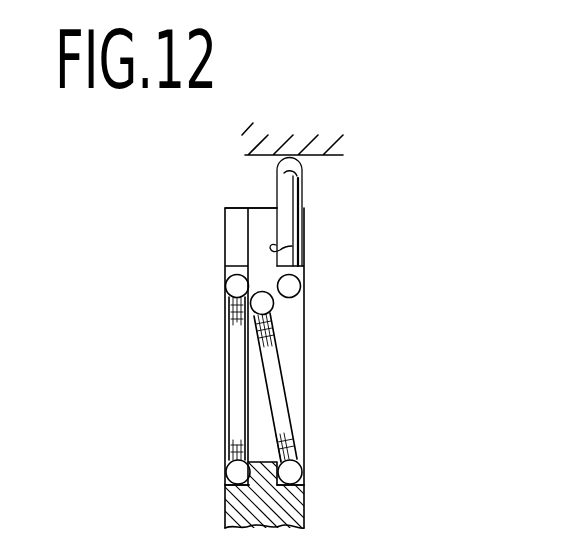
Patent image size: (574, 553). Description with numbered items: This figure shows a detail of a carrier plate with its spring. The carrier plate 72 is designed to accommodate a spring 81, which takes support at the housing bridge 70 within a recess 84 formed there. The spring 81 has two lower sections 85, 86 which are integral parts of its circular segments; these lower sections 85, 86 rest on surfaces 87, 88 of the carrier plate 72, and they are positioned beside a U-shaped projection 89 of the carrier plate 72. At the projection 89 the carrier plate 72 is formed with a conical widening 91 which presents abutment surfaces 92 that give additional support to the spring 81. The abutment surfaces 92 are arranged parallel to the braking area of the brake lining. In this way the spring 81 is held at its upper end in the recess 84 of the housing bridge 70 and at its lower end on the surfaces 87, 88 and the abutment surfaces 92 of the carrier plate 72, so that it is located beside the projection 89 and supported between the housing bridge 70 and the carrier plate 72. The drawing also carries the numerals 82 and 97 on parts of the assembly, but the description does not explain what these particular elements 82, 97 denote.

The housing bridge 70 is at (319, 137).
The recess 84 is at (333, 156).
The conical widening 91 is at (283, 213).
The slot 97 is at (292, 246).
The spring 81 is at (283, 345).
The housing 82 is at (300, 368).
The abutment surfaces 92 is at (262, 381).
The U-shaped projection 89 is at (265, 470).
The lower section 85 is at (226, 470).
The lower section 86 is at (305, 468).
The surface 87 is at (226, 497).
The surface 88 is at (304, 496).
The carrier plate 72 is at (240, 510).